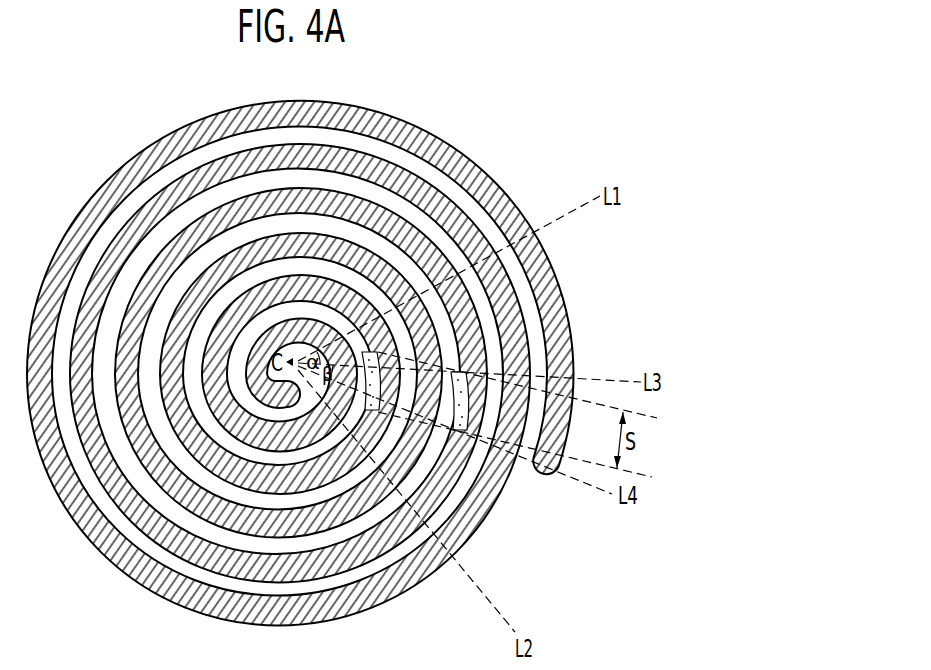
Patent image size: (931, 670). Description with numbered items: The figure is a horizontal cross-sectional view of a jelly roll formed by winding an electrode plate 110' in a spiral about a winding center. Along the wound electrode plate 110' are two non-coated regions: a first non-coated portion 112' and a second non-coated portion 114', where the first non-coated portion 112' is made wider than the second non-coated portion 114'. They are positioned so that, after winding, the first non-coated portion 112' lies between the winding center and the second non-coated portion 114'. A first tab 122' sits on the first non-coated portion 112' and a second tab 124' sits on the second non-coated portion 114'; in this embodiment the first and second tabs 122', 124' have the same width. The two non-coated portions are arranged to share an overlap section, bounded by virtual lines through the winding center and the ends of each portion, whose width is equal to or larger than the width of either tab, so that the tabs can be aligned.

The electrode plate 110' is at (307, 353).
The first non-coated portion 112' is at (313, 434).
The second non-coated portion 114' is at (300, 363).
The first tab 122' is at (494, 336).
The second tab 124' is at (545, 378).